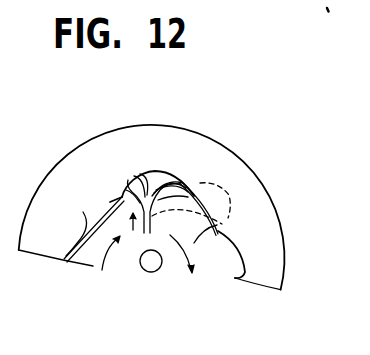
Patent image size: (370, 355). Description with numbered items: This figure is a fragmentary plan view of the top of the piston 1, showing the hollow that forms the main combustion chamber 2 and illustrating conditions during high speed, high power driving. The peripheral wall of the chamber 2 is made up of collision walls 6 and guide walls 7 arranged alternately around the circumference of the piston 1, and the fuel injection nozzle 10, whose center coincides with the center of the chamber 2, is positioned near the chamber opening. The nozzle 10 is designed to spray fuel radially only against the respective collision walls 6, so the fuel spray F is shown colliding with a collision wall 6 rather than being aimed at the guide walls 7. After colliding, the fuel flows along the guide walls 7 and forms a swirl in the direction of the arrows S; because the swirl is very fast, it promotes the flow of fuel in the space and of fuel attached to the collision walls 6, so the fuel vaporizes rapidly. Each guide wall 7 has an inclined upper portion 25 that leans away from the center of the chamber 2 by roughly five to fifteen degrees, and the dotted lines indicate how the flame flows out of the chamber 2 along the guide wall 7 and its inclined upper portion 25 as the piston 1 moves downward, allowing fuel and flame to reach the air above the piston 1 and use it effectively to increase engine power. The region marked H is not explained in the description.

The piston 1 is at (233, 177).
The main combustion chamber 2 is at (222, 217).
The collision wall 6 is at (148, 171).
The guide wall 7 is at (80, 241).
The fuel injection nozzle 10 is at (152, 266).
The upper portion of guide wall 25 is at (83, 212).
The hidden cavity H is at (206, 181).
The fuel spray F is at (126, 222).
The swirl direction arrow S is at (146, 267).